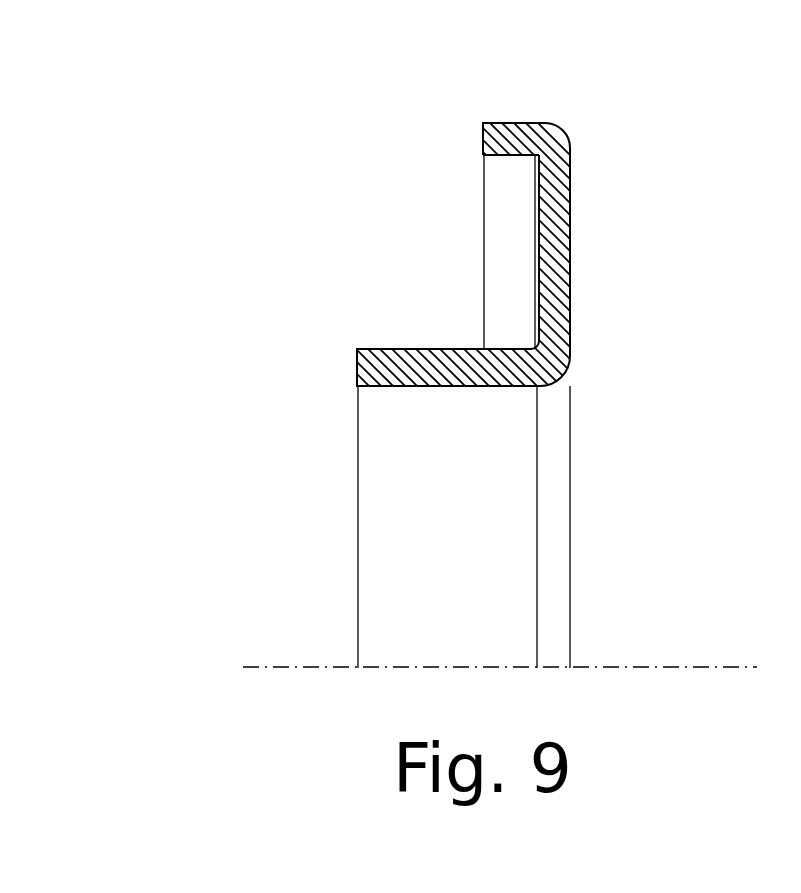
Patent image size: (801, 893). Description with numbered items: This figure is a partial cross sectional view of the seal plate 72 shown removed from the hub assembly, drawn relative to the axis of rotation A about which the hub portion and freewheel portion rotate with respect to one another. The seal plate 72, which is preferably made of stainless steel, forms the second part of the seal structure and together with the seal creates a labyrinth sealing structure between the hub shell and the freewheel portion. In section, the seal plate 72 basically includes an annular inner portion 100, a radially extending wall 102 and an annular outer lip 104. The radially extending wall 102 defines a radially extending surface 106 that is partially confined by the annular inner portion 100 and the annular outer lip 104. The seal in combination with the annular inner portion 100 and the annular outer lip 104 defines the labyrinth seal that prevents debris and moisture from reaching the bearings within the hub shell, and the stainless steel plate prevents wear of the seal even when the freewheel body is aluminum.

The seal plate 72 is at (627, 55).
The annular inner portion 100 is at (460, 378).
The radially extending wall 102 is at (563, 218).
The annular outer lip 104 is at (510, 132).
The radially extending surface 106 is at (539, 240).
The axis of rotation A is at (430, 667).